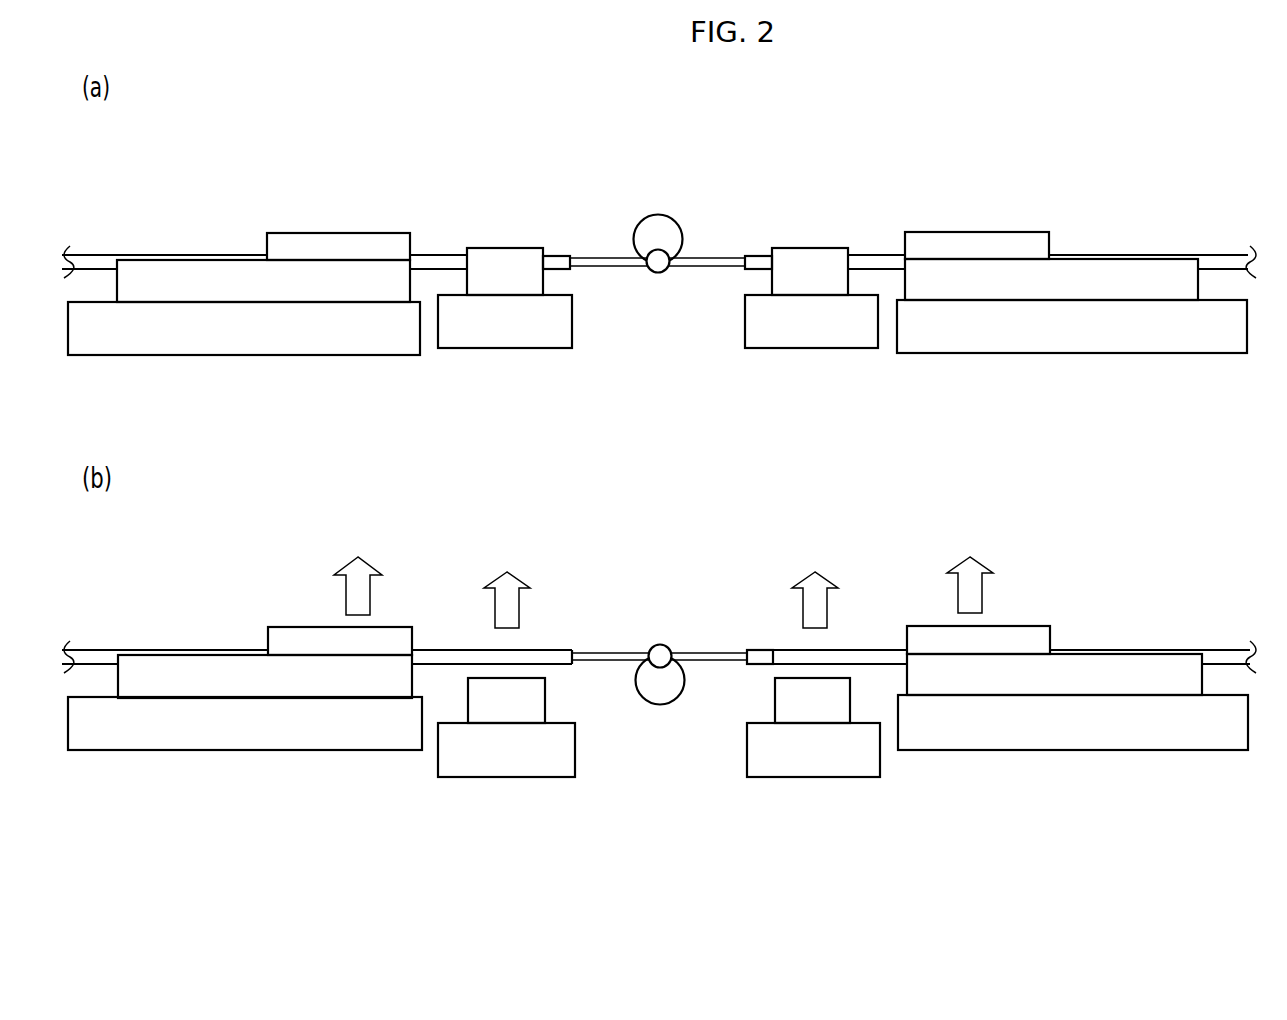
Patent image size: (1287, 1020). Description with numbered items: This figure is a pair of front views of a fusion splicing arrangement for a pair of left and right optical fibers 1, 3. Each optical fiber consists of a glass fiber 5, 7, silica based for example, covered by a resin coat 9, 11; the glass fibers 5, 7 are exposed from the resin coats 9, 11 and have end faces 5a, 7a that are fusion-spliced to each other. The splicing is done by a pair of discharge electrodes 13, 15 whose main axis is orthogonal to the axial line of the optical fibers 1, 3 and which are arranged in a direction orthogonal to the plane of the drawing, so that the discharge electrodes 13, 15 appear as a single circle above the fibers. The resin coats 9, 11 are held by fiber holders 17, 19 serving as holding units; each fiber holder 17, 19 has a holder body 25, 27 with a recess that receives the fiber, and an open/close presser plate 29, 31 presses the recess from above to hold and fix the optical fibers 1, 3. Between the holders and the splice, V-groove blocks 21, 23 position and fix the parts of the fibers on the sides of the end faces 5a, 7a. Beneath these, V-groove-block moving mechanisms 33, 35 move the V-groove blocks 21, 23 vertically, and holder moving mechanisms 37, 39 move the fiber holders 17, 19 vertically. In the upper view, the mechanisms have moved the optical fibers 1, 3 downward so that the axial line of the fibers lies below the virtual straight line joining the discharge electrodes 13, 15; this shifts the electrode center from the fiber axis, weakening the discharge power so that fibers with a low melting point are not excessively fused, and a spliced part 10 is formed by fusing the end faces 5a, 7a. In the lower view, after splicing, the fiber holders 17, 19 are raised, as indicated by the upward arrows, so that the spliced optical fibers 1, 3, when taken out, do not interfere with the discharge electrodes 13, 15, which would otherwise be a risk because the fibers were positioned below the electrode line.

The optical fiber 1 is at (575, 137).
The optical fiber 3 is at (893, 137).
The glass fiber 5 is at (596, 463).
The end face 5a is at (587, 268).
The glass fiber 7 is at (720, 440).
The end face 7a is at (733, 270).
The resin coat 9 is at (455, 253).
The spliced part 10 is at (658, 273).
The resin coat 11 is at (860, 253).
The discharge electrode 13 is at (635, 226).
The discharge electrode 15 is at (666, 482).
The fiber holder 17 is at (335, 137).
The fiber holder 19 is at (1092, 137).
The V-groove block 21 is at (473, 283).
The V-groove block 23 is at (840, 280).
The holder body 25 is at (252, 277).
The holder body 27 is at (1067, 272).
The presser plate 29 is at (319, 240).
The presser plate 31 is at (1000, 238).
The V-groove-block moving mechanism 33 is at (507, 350).
The V-groove-block moving mechanism 35 is at (808, 350).
The holder moving mechanism 37 is at (250, 357).
The holder moving mechanism 39 is at (970, 355).